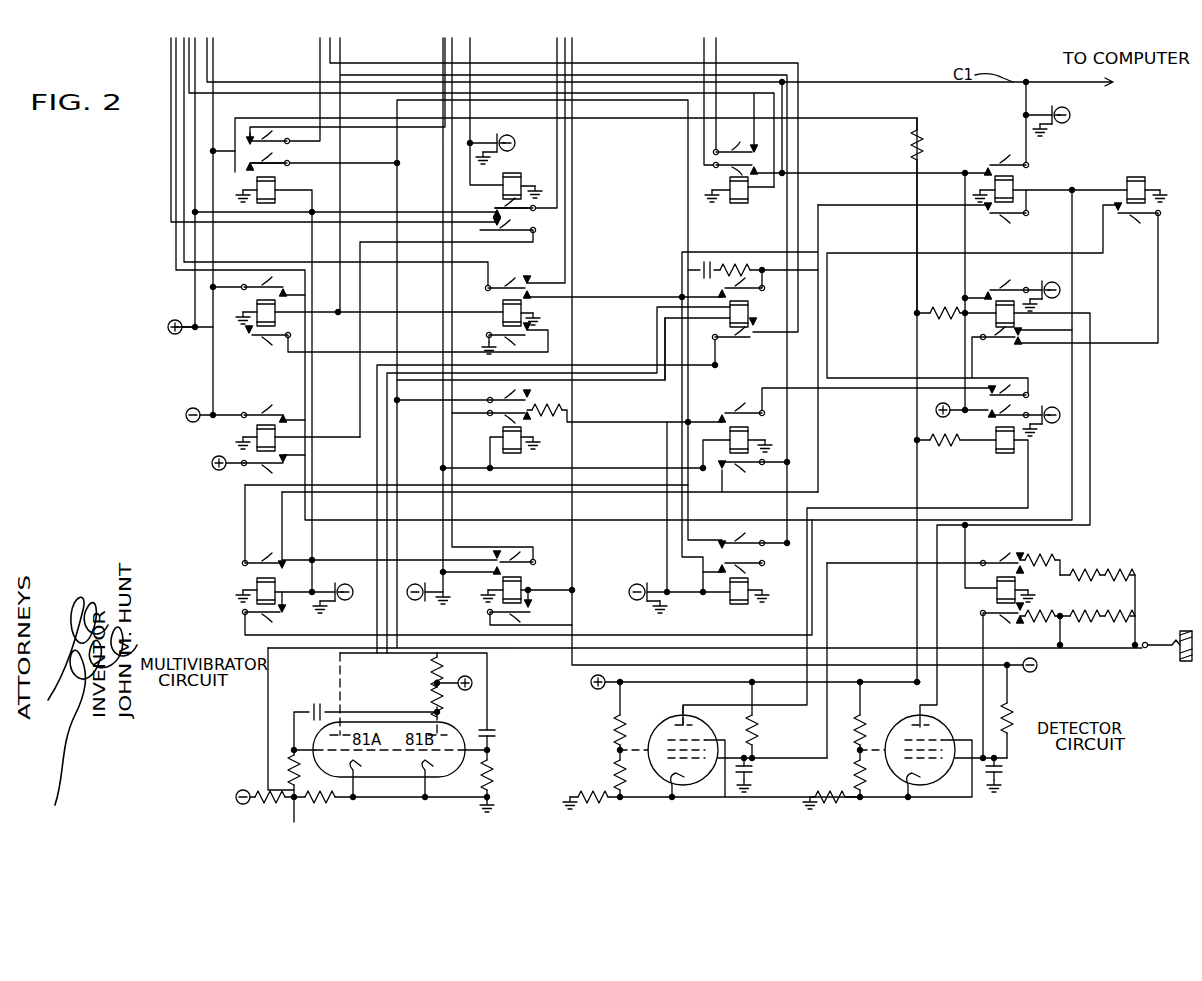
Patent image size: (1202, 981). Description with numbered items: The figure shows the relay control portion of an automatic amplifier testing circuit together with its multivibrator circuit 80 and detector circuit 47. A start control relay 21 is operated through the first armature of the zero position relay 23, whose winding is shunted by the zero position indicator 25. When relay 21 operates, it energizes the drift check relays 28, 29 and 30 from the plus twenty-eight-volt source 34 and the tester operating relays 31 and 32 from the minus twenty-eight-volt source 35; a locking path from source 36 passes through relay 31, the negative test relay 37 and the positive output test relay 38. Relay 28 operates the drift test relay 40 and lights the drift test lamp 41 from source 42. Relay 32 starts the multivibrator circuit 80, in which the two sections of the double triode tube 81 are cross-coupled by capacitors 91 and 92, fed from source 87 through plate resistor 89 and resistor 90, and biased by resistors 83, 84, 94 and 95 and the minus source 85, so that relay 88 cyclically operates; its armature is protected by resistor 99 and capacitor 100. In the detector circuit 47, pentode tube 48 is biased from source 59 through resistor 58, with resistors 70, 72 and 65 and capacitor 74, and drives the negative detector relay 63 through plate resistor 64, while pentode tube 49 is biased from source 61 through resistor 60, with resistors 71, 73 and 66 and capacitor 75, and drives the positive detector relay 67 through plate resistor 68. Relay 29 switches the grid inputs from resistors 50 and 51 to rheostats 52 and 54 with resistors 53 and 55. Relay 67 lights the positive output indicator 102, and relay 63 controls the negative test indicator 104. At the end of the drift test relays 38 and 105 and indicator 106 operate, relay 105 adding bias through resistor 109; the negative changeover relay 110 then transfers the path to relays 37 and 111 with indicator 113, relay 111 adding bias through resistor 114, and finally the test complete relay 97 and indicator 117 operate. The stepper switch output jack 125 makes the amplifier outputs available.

The relay 105 is at (277, 180).
The zero position indicator 25 is at (516, 150).
The zero position relay 23 is at (520, 175).
The drift test relay 40 is at (741, 201).
The 680-kilohm resistor 109 is at (919, 150).
The drift test indicator or lamp 41 is at (1068, 110).
The drift check relay 28 is at (1015, 186).
The drift check relay 30 is at (1135, 178).
The positive output indicator 102 is at (1062, 270).
The plus 28-volt potential source 36 is at (175, 320).
The tester operating relay 31 is at (254, 306).
The tester operating relay 32 is at (497, 306).
The 1 microfarad capacitor 100 is at (720, 253).
The 100-ohm resistor 99 is at (754, 253).
The relay 88 is at (748, 306).
The 18-kilohm plate resistor 68 is at (954, 319).
The positive detector relay 67 is at (990, 330).
The minus 28-volt potential source 35 is at (198, 411).
The start control relay 21 is at (247, 434).
The 1.8-megohm resistor 114 is at (554, 402).
The negative output test relay 111 is at (515, 456).
The negative test relay 37 is at (748, 434).
The plus 28-volt potential source 42 is at (936, 410).
The negative test indicator 104 is at (1064, 390).
The negative detector relay 63 is at (990, 438).
The 18-kilohm plate resistor 64 is at (941, 447).
The plus 28-volt potential source 34 is at (220, 476).
The positive output test relay 38 is at (250, 586).
The positive output indicator 106 is at (372, 586).
The negative output test indicator 113 is at (407, 584).
The negative changeover relay 110 is at (531, 582).
The test complete indicator 117 is at (634, 598).
The test complete relay 97 is at (728, 594).
The drift check relay 29 is at (988, 594).
The 800-kilohm resistor 50 is at (1034, 553).
The 250-kilohm rheostat 52 is at (1100, 562).
The 100-kilohm resistor 53 is at (1140, 562).
The 1 megohm resistor 51 is at (1034, 624).
The 250-kilohm rheostat 54 is at (1079, 624).
The 100-kilohm resistor 55 is at (1114, 624).
The minus 300-volt potential source 61 is at (1034, 666).
The stepper switch output jack 125 is at (1176, 654).
The multivibrator circuit 80 is at (335, 585).
The double triode tube 81 is at (374, 720).
The 18-kilohm plate resistor 89 is at (414, 669).
The 27-kilohm resistor 90 is at (436, 700).
The plus 300-volt potential source 87 is at (463, 692).
The .1 microfarad capacitor 92 is at (317, 708).
The 1 megohm resistor 83 is at (290, 772).
The minus 300-volt potential source 85 is at (234, 795).
The 180-kilohm resistor 84 is at (286, 810).
The 100-kilohm resistor 95 is at (332, 804).
The .1 microfarad capacitor 91 is at (498, 738).
The 1 megohm grid resistor 94 is at (492, 788).
The detector circuit 47 is at (1089, 762).
The plus 300-volt potential source 59 is at (590, 687).
The 30-kilohm resistor 72 is at (614, 720).
The 20-kilohm resistor 70 is at (614, 766).
The 110-ohm cathode resistor 65 is at (600, 806).
The pentode tube 48 is at (675, 724).
The 3-megohm resistor 58 is at (760, 720).
The .01 microfarad capacitor 74 is at (749, 770).
The 30-kilohm resistor 73 is at (858, 724).
The 20-kilohm resistor 71 is at (854, 766).
The 110-ohm cathode resistor 66 is at (844, 804).
The pentode tube 49 is at (920, 721).
The 3-megohm resistor 60 is at (1010, 710).
The .01 microfarad capacitor 75 is at (1004, 771).